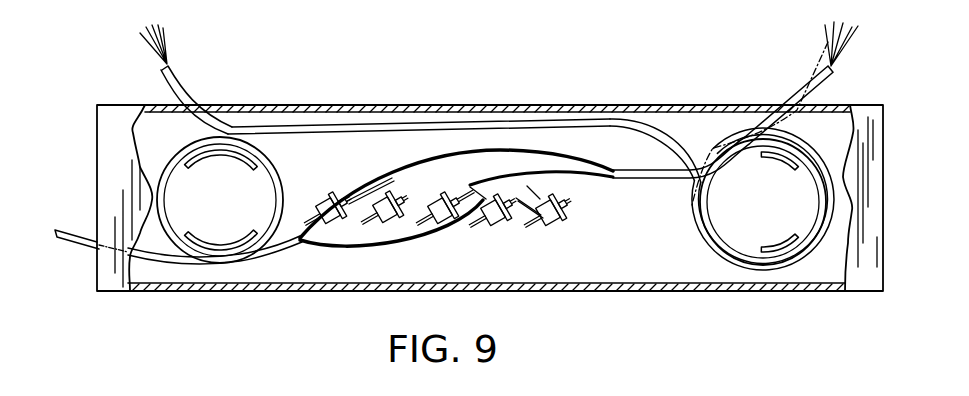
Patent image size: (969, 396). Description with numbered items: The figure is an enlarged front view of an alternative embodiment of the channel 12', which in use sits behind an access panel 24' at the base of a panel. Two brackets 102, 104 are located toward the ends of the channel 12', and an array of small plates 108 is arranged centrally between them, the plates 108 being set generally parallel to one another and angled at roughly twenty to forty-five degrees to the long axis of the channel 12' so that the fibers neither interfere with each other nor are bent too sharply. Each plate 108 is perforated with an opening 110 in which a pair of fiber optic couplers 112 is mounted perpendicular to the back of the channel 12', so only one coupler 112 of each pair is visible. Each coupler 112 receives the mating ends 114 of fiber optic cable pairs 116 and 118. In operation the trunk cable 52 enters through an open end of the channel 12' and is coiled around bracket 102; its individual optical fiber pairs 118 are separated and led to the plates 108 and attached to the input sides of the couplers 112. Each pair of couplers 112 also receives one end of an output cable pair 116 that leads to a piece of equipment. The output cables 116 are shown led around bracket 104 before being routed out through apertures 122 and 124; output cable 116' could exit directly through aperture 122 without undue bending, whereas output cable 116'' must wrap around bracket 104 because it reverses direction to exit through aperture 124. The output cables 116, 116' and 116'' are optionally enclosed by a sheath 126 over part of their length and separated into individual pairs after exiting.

The channel 12' is at (490, 169).
The access panel 24' is at (866, 220).
The trunk cable 52 is at (85, 247).
The bracket 102 is at (203, 240).
The bracket 104 is at (767, 250).
The plate 108 is at (553, 222).
The opening 110 is at (341, 188).
The fiber optic coupler 112 is at (405, 183).
The mating end 114 is at (360, 222).
The output cable pair 116 is at (566, 152).
The output cable 116' is at (754, 123).
The output cable 116'' is at (419, 97).
The optical fiber pair 118 is at (307, 220).
The aperture 122 is at (787, 107).
The aperture 124 is at (203, 107).
The sheath 126 is at (700, 217).